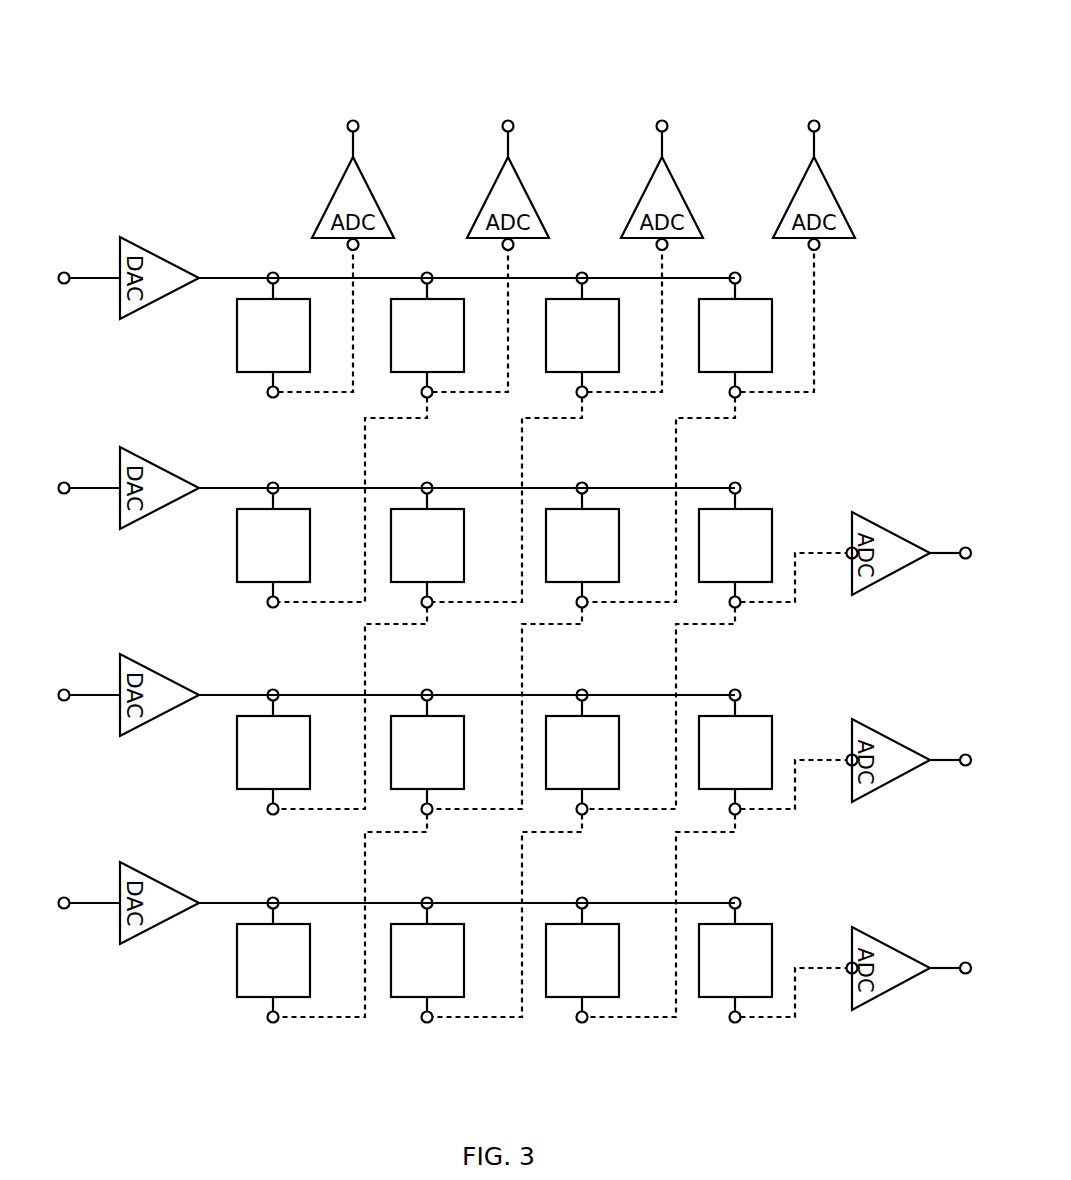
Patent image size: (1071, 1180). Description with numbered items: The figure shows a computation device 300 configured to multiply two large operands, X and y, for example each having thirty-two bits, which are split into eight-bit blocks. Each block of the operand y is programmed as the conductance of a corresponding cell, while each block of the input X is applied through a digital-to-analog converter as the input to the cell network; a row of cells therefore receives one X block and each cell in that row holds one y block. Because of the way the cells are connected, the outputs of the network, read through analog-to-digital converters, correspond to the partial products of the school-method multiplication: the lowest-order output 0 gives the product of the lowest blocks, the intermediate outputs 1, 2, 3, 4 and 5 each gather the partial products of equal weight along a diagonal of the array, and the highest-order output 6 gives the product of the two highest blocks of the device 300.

The computation device 300 is at (604, 68).
The partial product output P0 0 is at (358, 186).
The partial product output P1 1 is at (513, 186).
The partial product output P2 2 is at (667, 186).
The partial product output P3 3 is at (819, 186).
The partial product output P4 4 is at (909, 549).
The partial product output P5 5 is at (909, 756).
The partial product output P6 6 is at (909, 964).